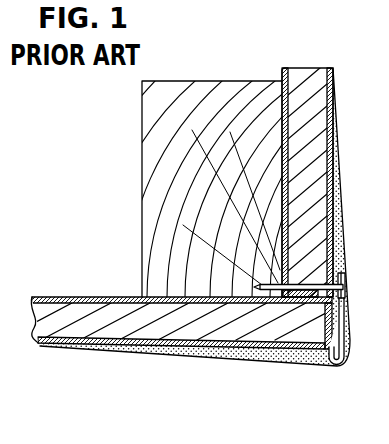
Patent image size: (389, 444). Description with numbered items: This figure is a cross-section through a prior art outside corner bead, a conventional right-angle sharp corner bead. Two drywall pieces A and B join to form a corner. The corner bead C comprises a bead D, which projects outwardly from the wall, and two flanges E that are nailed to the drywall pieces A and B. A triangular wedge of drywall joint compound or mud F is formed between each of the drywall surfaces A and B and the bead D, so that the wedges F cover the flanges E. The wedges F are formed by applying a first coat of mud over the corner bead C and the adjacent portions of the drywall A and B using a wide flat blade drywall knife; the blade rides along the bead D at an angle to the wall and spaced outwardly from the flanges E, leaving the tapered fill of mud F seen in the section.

The drywall piece A is at (72, 310).
The drywall piece B is at (315, 125).
The corner bead C is at (279, 366).
The bead D is at (337, 370).
The flange E is at (337, 269).
The joint compound wedge F is at (338, 212).